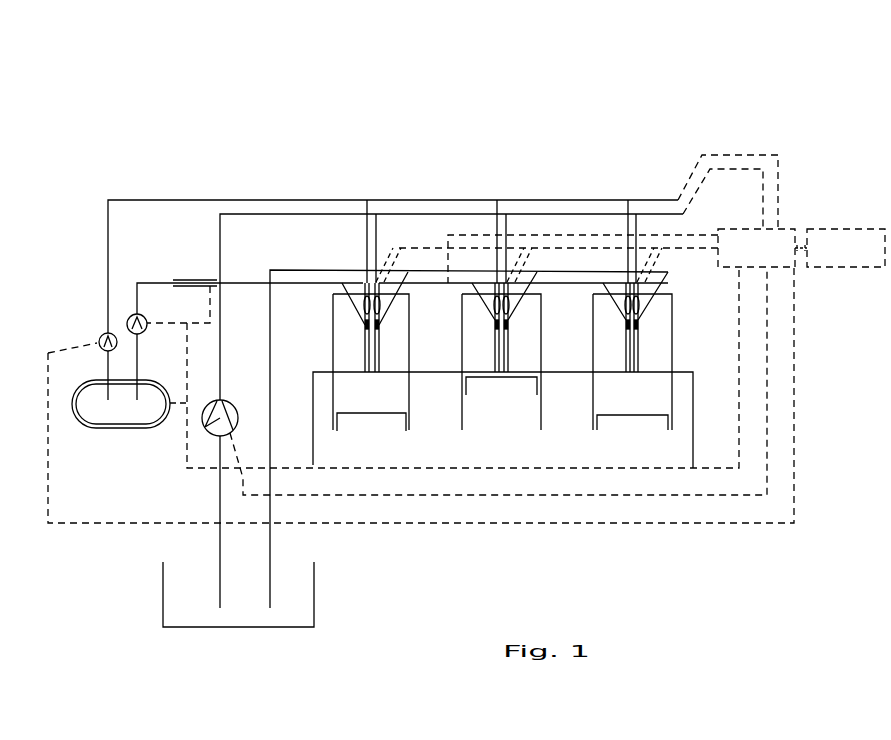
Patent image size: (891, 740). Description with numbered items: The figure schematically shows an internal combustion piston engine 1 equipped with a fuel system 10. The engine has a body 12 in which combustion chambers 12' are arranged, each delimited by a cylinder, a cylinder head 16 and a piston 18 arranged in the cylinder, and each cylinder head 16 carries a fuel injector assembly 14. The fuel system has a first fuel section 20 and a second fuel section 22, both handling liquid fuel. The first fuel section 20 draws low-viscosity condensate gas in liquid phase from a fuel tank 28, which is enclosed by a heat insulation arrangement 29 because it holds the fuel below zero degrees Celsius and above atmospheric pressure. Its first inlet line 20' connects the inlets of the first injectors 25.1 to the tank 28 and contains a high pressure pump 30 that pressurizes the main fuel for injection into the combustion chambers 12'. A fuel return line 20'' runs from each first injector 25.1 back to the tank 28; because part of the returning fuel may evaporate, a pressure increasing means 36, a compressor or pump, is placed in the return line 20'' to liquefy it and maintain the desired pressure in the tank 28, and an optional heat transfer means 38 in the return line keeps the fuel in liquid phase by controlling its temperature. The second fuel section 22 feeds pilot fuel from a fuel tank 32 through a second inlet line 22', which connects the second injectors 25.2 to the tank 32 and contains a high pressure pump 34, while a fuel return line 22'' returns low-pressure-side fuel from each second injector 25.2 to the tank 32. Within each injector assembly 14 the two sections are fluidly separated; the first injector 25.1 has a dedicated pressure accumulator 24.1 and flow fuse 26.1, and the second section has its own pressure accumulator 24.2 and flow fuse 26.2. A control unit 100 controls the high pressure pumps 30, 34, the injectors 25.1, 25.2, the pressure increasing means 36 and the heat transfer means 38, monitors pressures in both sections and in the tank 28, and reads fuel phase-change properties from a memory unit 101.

The internal combustion piston engine 1 is at (585, 525).
The fuel system 10 is at (463, 113).
The body 12 is at (503, 381).
The combustion chamber 12' is at (502, 404).
The fuel injector assembly 14 is at (378, 348).
The cylinder head 16 is at (533, 334).
The piston 18 is at (390, 420).
The first fuel section 20 is at (443, 244).
The first inlet line 20' is at (491, 280).
The fuel return line 20'' is at (402, 431).
The second fuel section 22 is at (414, 253).
The second inlet line 22' is at (292, 234).
The fuel return line 22'' is at (250, 344).
The pressure accumulator 24.1 is at (362, 303).
The pressure accumulator 24.2 is at (380, 303).
The first injector 25.1 is at (365, 365).
The second injector 25.2 is at (380, 365).
The flow fuse 26.1 is at (362, 324).
The flow fuse 26.2 is at (380, 324).
The fuel tank 28 is at (100, 404).
The heat insulation arrangement 29 is at (130, 430).
The high pressure pump 30 is at (100, 340).
The fuel tank 32 is at (182, 606).
The high pressure pump 34 is at (214, 412).
The pressure increasing means 36 is at (147, 322).
The heat transfer means 38 is at (190, 280).
The control unit 100 is at (771, 255).
The memory unit 101 is at (860, 255).